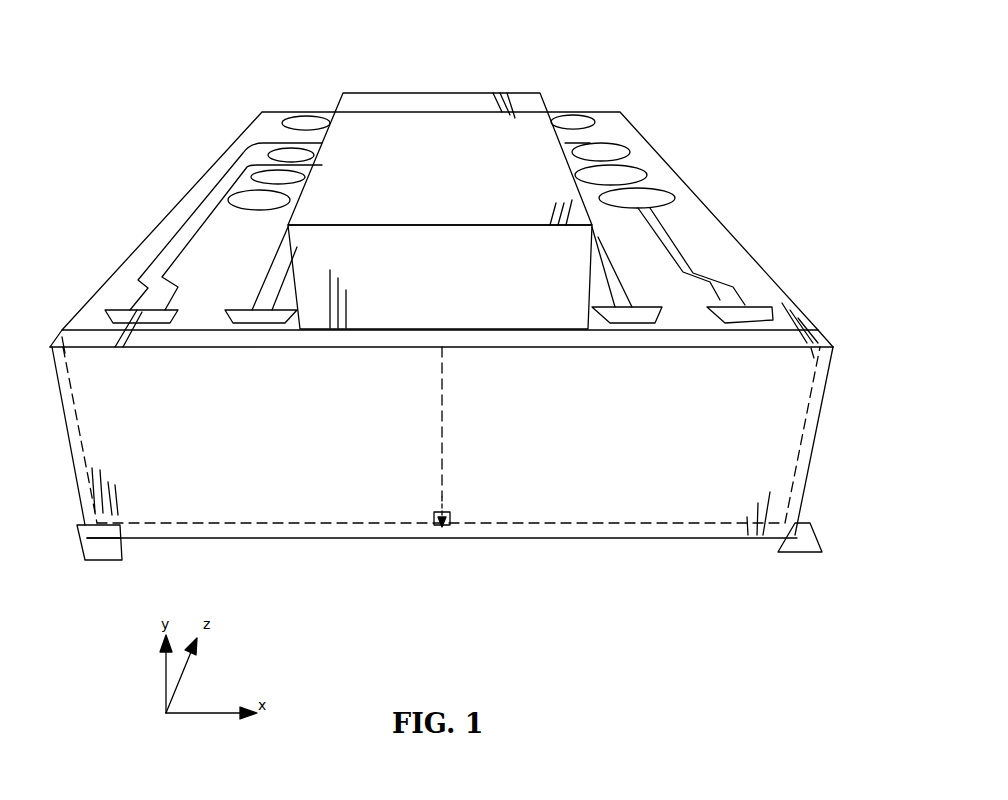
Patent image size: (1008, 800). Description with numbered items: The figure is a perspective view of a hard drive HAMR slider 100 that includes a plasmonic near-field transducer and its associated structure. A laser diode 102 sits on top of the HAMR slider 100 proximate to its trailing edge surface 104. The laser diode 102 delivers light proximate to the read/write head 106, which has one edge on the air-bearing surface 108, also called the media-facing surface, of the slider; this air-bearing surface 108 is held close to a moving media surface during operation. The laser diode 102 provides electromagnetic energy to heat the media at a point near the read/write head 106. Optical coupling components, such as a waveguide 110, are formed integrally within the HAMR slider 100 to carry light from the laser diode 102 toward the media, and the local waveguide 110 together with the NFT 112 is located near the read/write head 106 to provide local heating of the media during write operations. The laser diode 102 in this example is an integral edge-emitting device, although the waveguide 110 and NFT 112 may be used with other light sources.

The HAMR slider 100 is at (640, 50).
The laser diode 102 is at (362, 93).
The trailing edge surface 104 is at (108, 560).
The read/write head 106 is at (448, 520).
The air-bearing surface 108 is at (812, 553).
The waveguide 110 is at (442, 410).
The NFT 112 is at (432, 540).